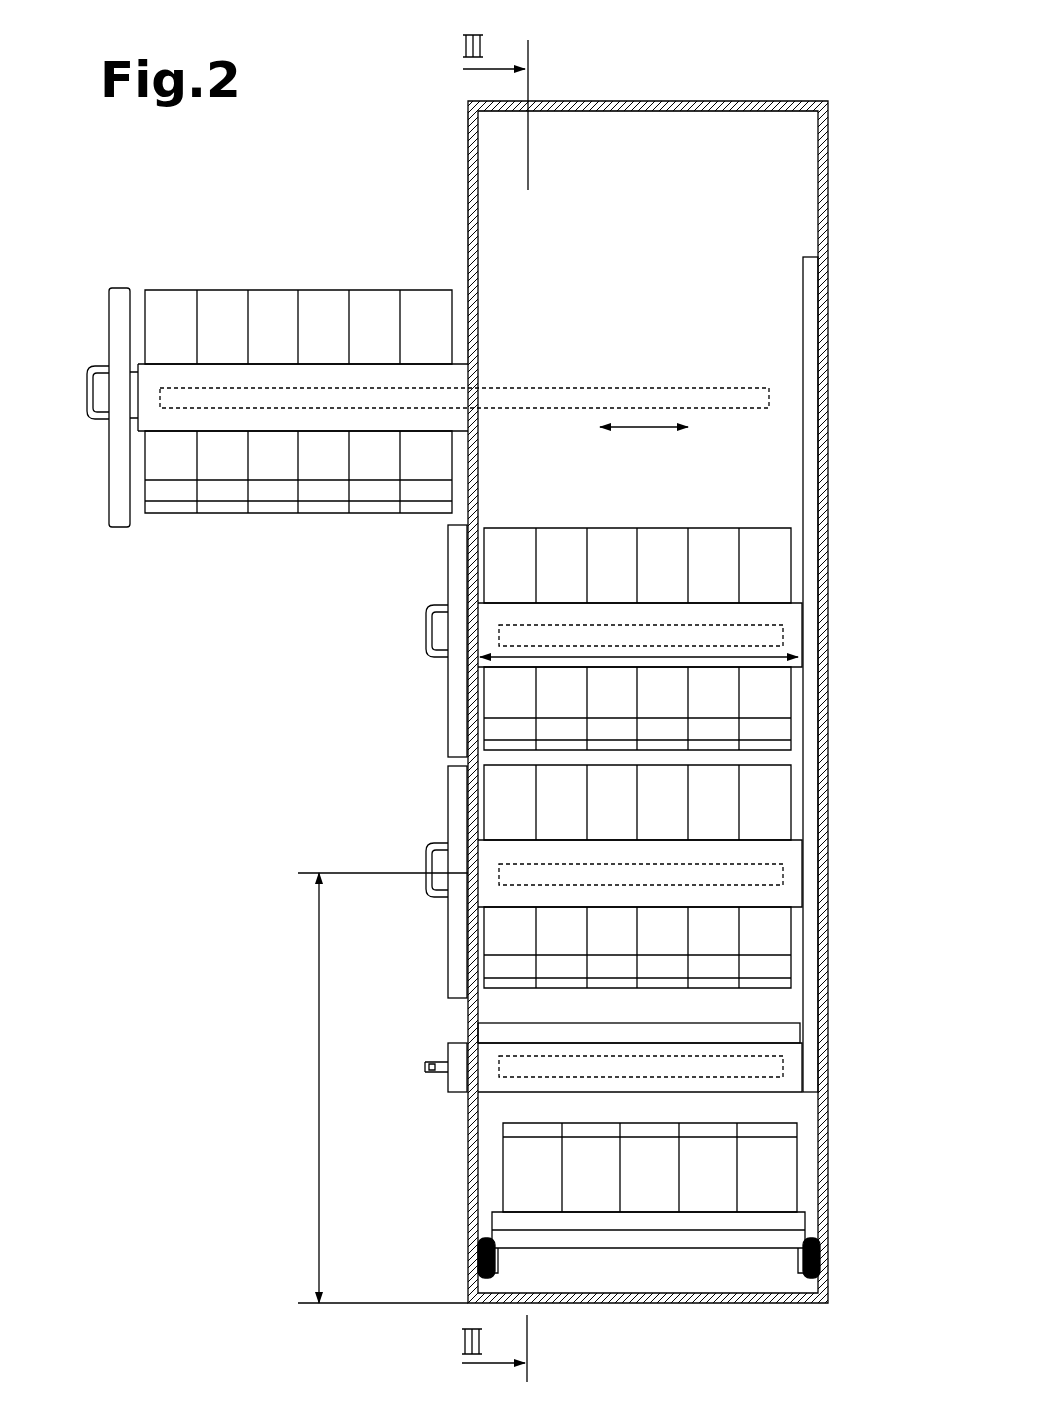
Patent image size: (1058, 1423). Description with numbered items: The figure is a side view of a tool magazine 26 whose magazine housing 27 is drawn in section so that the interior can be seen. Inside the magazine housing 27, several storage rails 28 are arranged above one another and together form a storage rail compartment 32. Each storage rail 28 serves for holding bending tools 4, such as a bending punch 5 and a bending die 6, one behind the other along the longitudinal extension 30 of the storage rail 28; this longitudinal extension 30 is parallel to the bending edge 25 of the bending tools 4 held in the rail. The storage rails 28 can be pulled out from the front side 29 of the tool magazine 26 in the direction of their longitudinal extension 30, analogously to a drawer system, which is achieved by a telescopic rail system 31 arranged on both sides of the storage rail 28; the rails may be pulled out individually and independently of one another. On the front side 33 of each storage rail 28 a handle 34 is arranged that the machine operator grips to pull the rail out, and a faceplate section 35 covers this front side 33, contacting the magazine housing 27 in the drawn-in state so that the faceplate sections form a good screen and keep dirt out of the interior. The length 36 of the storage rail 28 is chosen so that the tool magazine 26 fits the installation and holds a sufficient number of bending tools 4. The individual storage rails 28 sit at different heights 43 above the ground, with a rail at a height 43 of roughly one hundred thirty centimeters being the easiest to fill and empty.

The bending tool 4 is at (459, 316).
The bending punch 5 is at (422, 462).
The bending die 6 is at (430, 317).
The bending edge 25 is at (462, 363).
The tool magazine 26 is at (700, 656).
The magazine housing 27 is at (828, 127).
The storage rail 28 is at (158, 375).
The front side 29 is at (452, 205).
The longitudinal extension 30 is at (650, 427).
The telescopic rail system 31 is at (772, 392).
The storage rail compartment 32 is at (718, 133).
The front side 33 is at (141, 348).
The handle 34 is at (87, 412).
The faceplate section 35 is at (120, 313).
The length 36 is at (720, 655).
The height 43 is at (318, 1090).